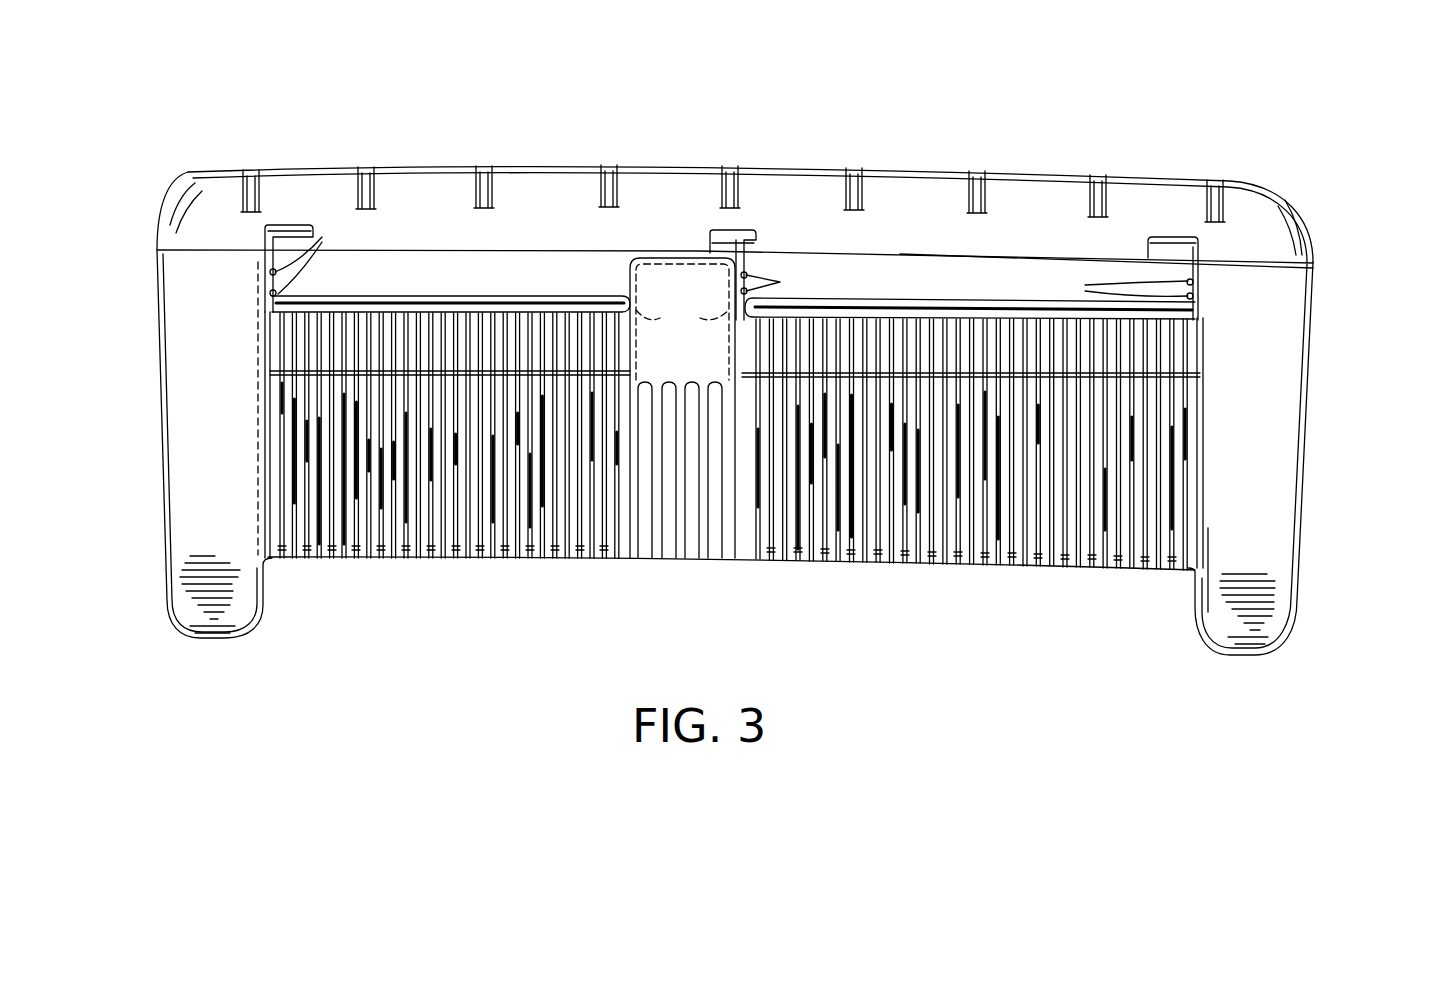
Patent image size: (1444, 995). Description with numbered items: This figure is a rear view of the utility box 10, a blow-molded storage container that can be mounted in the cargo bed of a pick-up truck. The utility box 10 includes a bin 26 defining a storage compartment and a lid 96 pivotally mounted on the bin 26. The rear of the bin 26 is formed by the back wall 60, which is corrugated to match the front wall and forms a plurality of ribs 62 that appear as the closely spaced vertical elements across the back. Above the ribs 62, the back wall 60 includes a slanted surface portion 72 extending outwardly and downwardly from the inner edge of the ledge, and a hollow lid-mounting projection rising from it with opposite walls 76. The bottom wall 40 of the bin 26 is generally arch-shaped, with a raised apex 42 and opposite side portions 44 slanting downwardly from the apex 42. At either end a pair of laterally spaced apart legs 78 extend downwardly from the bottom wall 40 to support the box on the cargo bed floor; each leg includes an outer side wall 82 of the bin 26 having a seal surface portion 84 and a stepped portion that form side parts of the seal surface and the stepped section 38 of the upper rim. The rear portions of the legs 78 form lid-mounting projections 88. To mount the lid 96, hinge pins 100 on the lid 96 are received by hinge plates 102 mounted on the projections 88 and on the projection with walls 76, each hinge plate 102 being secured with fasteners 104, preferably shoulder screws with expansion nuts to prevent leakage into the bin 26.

The utility box 10 is at (790, 105).
The bin 26 is at (749, 411).
The stepped section 38 is at (165, 250).
The bottom wall 40 is at (961, 572).
The apex 42 is at (728, 560).
The side portions 44 is at (433, 560).
The back wall 60 is at (701, 475).
The ribs 62 is at (597, 558).
The slanted surface portion 72 is at (866, 272).
The opposite walls 76 is at (682, 408).
The legs 78 is at (170, 532).
The side wall 82 is at (160, 392).
The seal surface portion 84 is at (638, 406).
The lid-mounting projections 88 is at (172, 290).
The lid 96 is at (1024, 168).
The hinge pins 100 is at (289, 232).
The hinge plates 102 is at (262, 240).
The fasteners 104 is at (1085, 285).